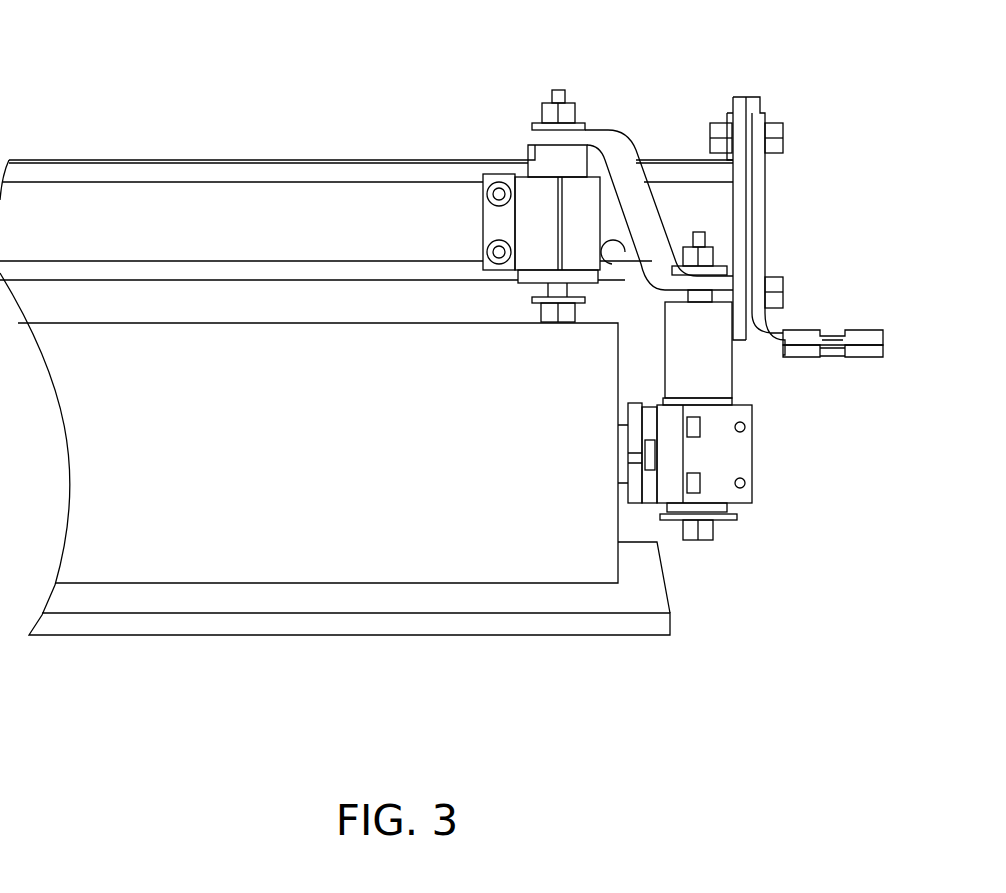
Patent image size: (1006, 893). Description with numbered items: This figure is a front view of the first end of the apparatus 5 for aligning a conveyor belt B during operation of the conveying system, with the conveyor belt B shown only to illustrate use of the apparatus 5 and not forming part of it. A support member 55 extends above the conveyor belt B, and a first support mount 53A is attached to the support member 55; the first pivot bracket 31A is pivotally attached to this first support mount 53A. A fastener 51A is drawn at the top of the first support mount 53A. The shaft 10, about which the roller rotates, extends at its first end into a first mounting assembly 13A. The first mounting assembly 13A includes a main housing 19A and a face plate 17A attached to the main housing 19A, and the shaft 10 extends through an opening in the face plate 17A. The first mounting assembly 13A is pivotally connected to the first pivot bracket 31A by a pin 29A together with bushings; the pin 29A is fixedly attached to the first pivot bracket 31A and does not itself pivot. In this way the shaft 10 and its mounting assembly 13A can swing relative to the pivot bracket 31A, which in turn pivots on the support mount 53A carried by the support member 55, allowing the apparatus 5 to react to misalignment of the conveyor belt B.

The support member 55 is at (169, 173).
The shaft 10 is at (620, 427).
The conveyor belt B is at (562, 625).
The first support mount 53A is at (528, 197).
The upper fastener 51A is at (571, 110).
The apparatus 5 is at (900, 248).
The first pivot bracket 31A is at (733, 278).
The pin 29A is at (733, 368).
The first mounting assembly 13A is at (753, 447).
The main housing 19A is at (753, 507).
The face plate 17A is at (633, 507).